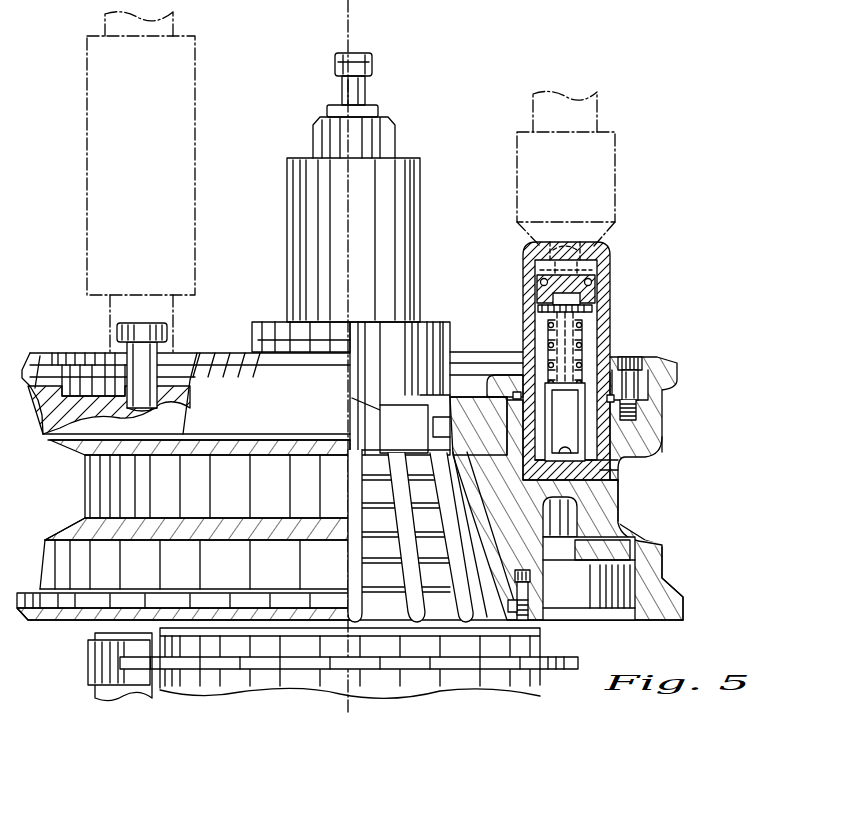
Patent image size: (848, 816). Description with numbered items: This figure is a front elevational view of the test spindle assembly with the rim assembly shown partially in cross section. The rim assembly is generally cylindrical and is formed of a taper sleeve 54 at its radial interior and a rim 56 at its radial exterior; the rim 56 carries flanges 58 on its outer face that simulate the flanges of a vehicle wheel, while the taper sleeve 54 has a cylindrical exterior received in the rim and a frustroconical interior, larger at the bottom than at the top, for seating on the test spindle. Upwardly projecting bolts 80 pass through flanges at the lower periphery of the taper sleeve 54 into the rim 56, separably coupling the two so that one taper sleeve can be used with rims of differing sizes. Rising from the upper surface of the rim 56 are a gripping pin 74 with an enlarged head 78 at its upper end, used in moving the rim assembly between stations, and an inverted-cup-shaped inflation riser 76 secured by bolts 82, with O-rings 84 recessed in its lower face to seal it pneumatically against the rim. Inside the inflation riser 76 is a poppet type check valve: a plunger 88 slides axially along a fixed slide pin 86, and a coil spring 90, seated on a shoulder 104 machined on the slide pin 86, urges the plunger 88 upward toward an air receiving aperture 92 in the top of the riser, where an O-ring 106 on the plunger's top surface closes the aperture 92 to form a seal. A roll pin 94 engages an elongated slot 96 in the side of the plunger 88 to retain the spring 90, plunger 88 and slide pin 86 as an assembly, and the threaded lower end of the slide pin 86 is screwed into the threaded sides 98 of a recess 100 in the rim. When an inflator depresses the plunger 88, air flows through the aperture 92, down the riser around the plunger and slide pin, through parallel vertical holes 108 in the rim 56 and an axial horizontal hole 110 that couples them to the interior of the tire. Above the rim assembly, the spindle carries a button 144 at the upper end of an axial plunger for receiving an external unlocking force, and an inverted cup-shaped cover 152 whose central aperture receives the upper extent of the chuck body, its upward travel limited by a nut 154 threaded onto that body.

The taper sleeve 54 is at (452, 590).
The rim 56 is at (665, 563).
The flanges 58 is at (685, 603).
The gripping pins 74 is at (127, 350).
The inflation riser 76 is at (610, 257).
The enlarged head 78 is at (117, 327).
The bolts 80 is at (548, 605).
The bolts 82 is at (640, 357).
The O-rings 84 is at (520, 380).
The slide pin 86 is at (560, 336).
The plunger 88 is at (598, 280).
The coil spring 90 is at (598, 323).
The air receiving aperture 92 is at (590, 245).
The roll pin 94 is at (598, 303).
The elongated slot 96 is at (540, 320).
The threaded sides 98 is at (588, 444).
The recess 100 is at (598, 468).
The shoulder 104 is at (600, 360).
The O-ring 106 is at (540, 270).
The vertical holes 108 is at (540, 422).
The axial horizontal hole 110 is at (652, 462).
The button 144 is at (335, 66).
The cover 152 is at (287, 178).
The nut 154 is at (320, 128).